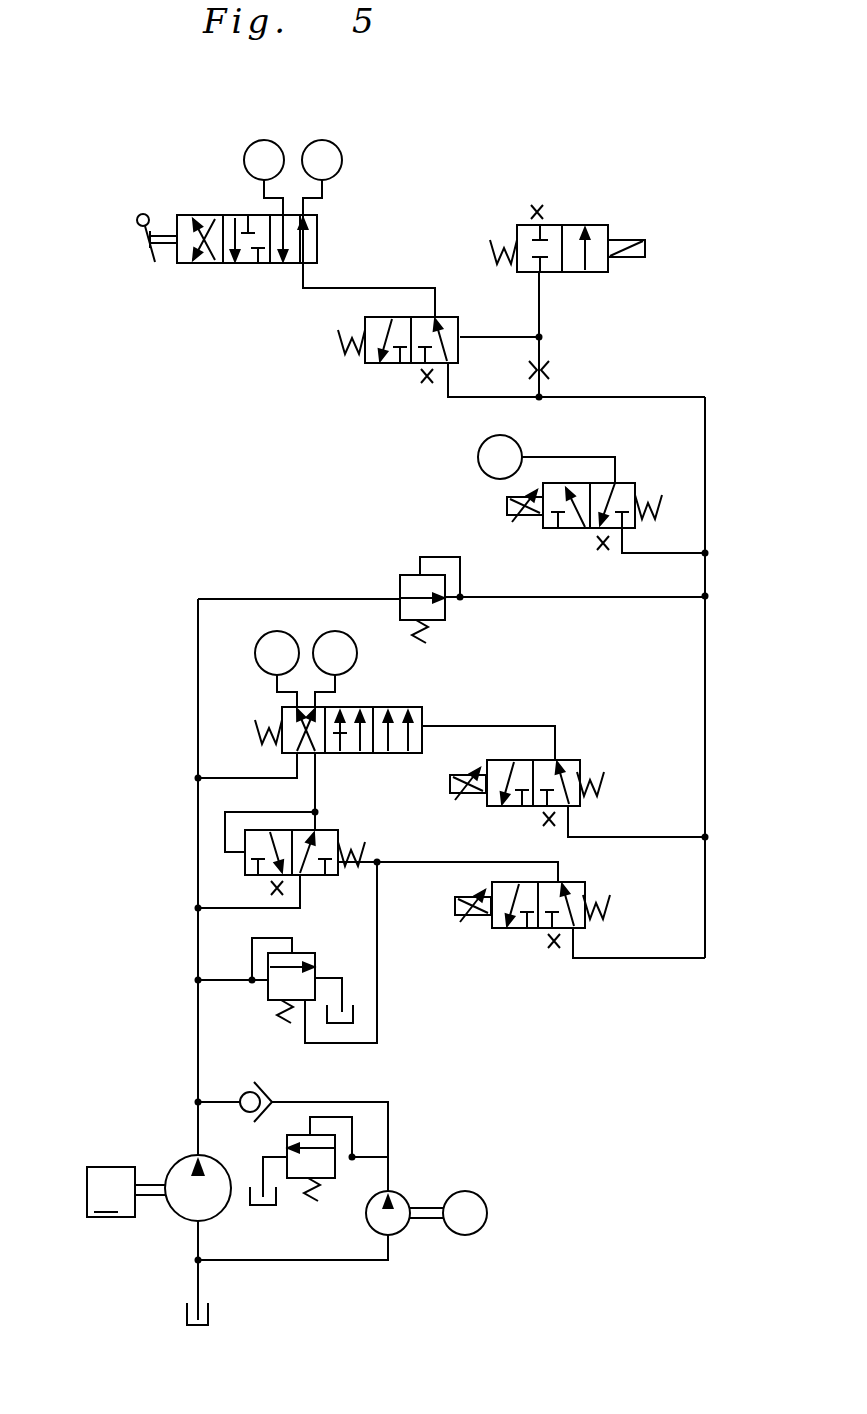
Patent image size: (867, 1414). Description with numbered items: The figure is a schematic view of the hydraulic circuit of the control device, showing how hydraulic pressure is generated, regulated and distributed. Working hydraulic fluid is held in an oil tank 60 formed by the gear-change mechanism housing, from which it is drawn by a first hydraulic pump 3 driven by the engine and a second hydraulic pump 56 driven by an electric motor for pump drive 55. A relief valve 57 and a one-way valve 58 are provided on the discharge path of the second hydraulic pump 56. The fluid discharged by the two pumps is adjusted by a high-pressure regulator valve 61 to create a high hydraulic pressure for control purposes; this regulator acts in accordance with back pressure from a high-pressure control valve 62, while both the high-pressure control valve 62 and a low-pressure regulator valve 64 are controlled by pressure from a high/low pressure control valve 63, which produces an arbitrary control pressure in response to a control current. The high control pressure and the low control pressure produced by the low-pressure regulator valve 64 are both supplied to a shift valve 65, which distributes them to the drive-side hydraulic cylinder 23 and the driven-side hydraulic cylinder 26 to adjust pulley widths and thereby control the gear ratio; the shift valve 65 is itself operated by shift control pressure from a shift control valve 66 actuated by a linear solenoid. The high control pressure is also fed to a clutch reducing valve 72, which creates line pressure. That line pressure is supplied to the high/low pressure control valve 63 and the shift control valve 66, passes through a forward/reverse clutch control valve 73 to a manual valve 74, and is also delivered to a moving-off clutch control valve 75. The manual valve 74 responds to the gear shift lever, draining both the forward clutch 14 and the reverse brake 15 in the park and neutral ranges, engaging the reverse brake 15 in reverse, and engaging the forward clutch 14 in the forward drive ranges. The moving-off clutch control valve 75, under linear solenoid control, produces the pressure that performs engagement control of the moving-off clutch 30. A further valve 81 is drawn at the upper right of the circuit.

The first hydraulic pump 3 is at (178, 1163).
The forward clutch 14 is at (323, 140).
The reverse brake 15 is at (264, 140).
The drive-side hydraulic cylinder 23 is at (357, 661).
The driven-side hydraulic cylinder 26 is at (278, 631).
The moving-off clutch 30 is at (478, 462).
The electric motor for pump drive 55 is at (488, 1200).
The second hydraulic pump 56 is at (400, 1193).
The relief valve 57 is at (292, 1183).
The one-way valve 58 is at (264, 1086).
The oil tank 60 is at (212, 1318).
The high-pressure regulator valve 61 is at (305, 952).
The high-pressure control valve 62 is at (309, 980).
The high/low pressure control valve 63 is at (515, 929).
The low-pressure regulator valve 64 is at (334, 828).
The shift valve 65 is at (424, 708).
The shift control valve 66 is at (575, 760).
The clutch reducing valve 72 is at (448, 610).
The forward/reverse clutch control valve 73 is at (390, 366).
The manual valve 74 is at (195, 215).
The moving-off clutch control valve 75 is at (565, 530).
The control valve 81 is at (582, 225).